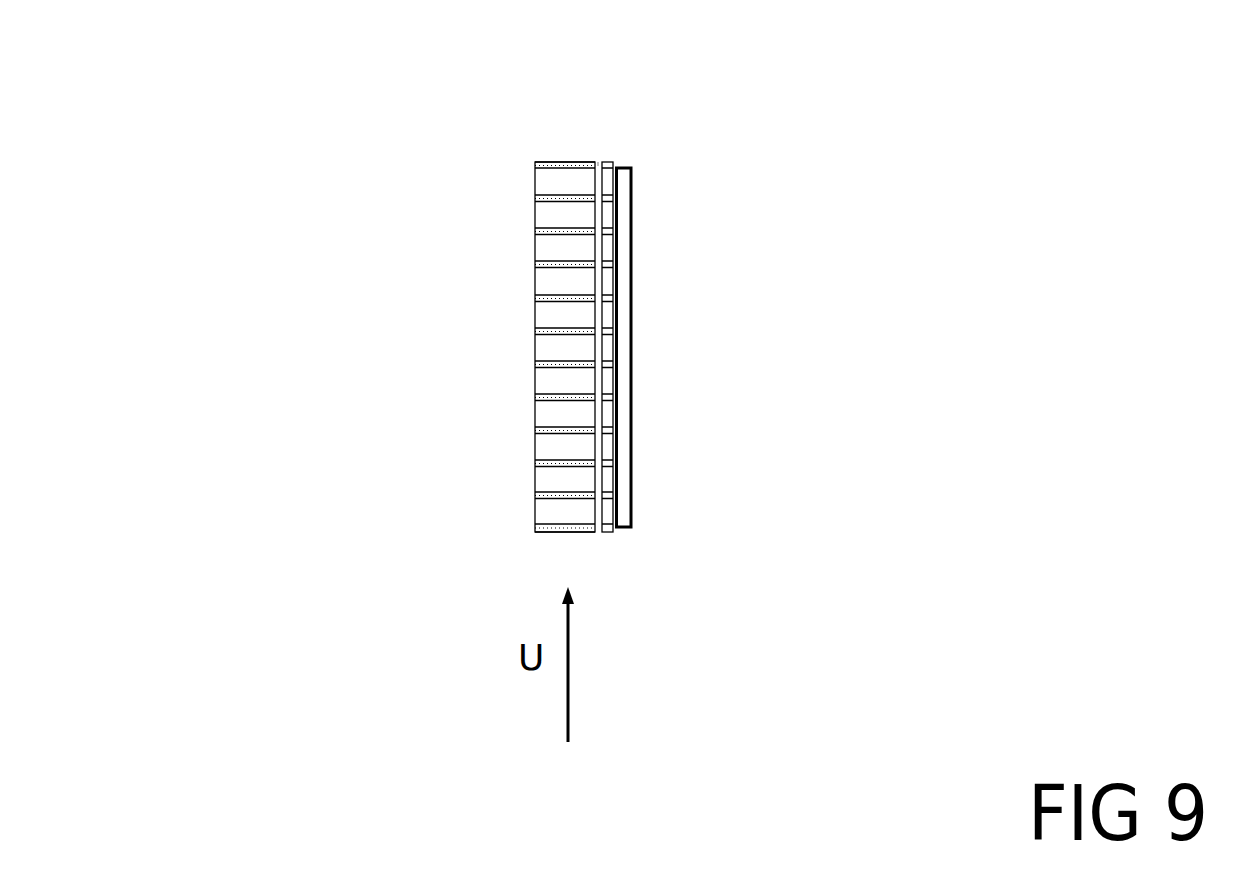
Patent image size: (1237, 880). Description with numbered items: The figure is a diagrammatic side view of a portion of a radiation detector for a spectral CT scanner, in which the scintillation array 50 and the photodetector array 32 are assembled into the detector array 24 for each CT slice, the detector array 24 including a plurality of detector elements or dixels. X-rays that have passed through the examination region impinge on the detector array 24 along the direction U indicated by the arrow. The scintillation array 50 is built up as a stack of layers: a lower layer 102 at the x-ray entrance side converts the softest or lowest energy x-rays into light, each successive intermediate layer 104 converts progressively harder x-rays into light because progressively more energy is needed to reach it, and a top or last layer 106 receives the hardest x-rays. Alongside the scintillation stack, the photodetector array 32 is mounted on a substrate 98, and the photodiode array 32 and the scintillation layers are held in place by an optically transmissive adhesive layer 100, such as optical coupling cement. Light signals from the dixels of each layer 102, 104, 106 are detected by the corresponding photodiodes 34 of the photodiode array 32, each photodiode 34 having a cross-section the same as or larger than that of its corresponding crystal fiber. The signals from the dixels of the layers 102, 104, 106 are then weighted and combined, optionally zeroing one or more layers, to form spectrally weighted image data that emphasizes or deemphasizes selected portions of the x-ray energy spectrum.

The detector array 24 is at (571, 86).
The scintillation array 50 is at (548, 162).
The top or last layer 106 is at (535, 180).
The intermediate layer 104 is at (533, 204).
The lower layer 102 is at (536, 526).
The optically transmissive adhesive layer 100 is at (598, 166).
The photodetector array 32 is at (612, 163).
The photodiode 34 is at (608, 251).
The substrate 98 is at (633, 506).